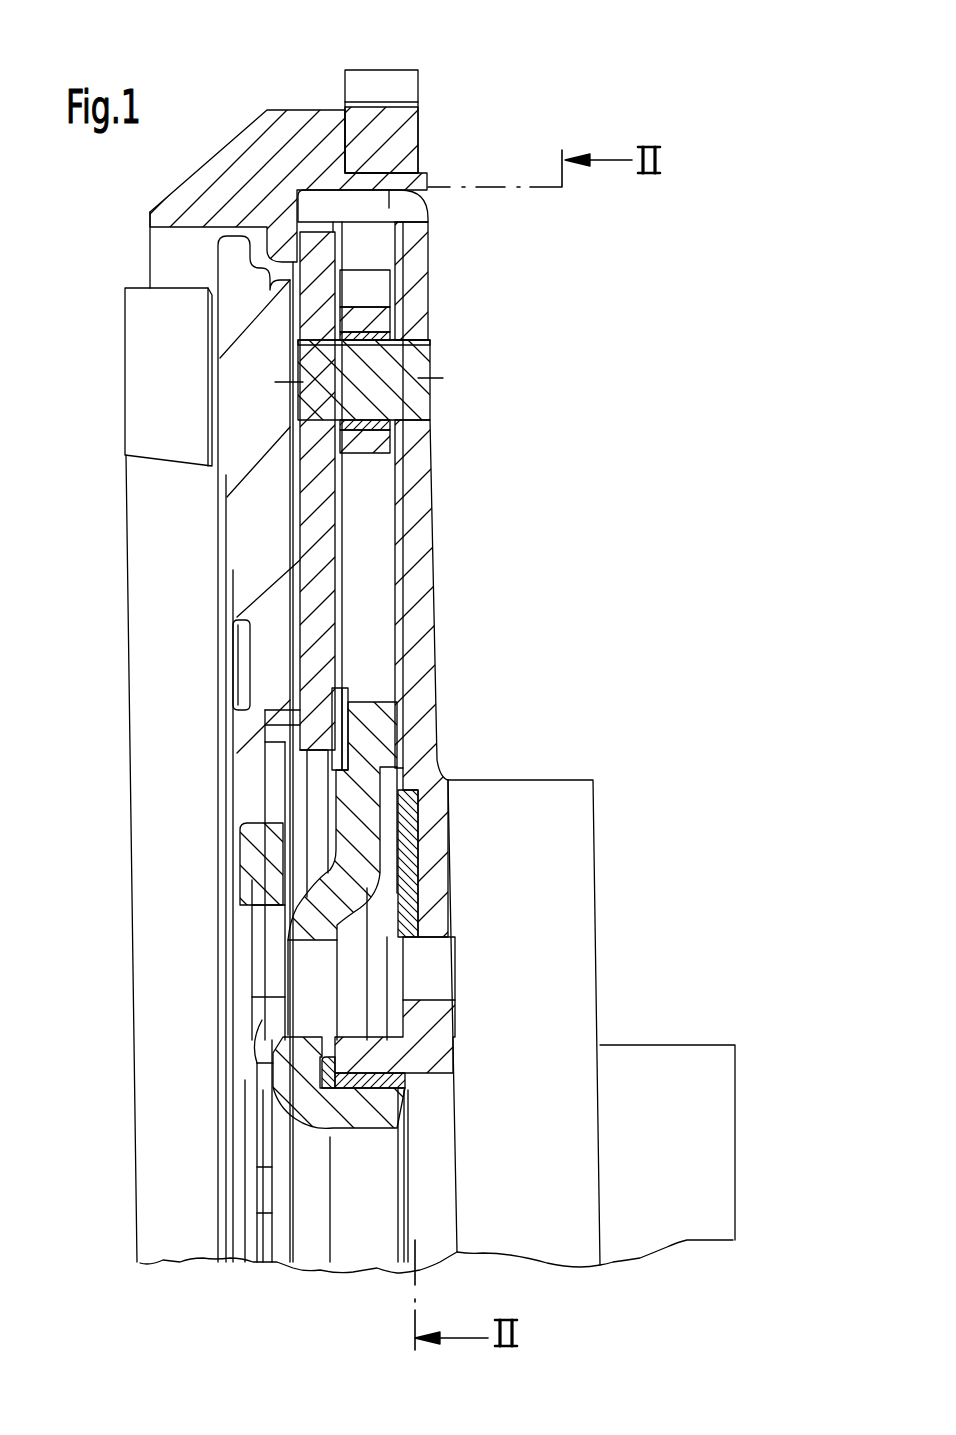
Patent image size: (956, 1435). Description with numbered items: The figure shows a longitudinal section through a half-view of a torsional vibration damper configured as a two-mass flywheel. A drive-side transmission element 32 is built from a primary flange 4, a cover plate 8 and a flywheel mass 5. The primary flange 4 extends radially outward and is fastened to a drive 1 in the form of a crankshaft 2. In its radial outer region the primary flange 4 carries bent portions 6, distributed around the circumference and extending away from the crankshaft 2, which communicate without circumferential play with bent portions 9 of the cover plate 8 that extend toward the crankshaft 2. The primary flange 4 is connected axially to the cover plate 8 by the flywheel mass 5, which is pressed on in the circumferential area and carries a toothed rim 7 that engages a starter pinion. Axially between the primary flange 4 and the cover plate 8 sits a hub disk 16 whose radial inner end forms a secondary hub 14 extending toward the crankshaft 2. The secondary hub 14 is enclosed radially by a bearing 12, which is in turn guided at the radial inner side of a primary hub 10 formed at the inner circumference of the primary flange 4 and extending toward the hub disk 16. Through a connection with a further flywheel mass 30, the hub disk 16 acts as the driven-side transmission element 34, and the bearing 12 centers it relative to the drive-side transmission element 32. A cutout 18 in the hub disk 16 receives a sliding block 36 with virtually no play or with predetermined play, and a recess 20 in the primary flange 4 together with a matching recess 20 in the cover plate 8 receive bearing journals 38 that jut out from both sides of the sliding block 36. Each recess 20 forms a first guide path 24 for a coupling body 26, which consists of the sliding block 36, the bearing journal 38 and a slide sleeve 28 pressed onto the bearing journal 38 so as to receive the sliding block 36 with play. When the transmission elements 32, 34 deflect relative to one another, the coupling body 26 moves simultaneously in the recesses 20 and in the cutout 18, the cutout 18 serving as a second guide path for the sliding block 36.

The drive 1 is at (635, 1040).
The crankshaft 2 is at (535, 790).
The primary flange 4 is at (420, 590).
The flywheel mass 5 is at (253, 153).
The bent portions 6 is at (363, 203).
The toothed rim 7 is at (403, 133).
The cover plate 8 is at (320, 632).
The bent portions 9 is at (313, 226).
The primary hub 10 is at (443, 1055).
The bearing 12 is at (408, 1080).
The secondary hub 14 is at (408, 1105).
The hub disk 16 is at (370, 828).
The cutout 18 is at (377, 552).
The recess 20 is at (333, 460).
The first guide path 24 is at (330, 347).
The coupling body 26 is at (415, 397).
The slide sleeve 28 is at (410, 292).
The flywheel mass 30 is at (263, 548).
The drive-side transmission element 32 is at (445, 699).
The driven-side transmission element 34 is at (228, 638).
The sliding block 36 is at (330, 396).
The bearing journal 38 is at (337, 390).